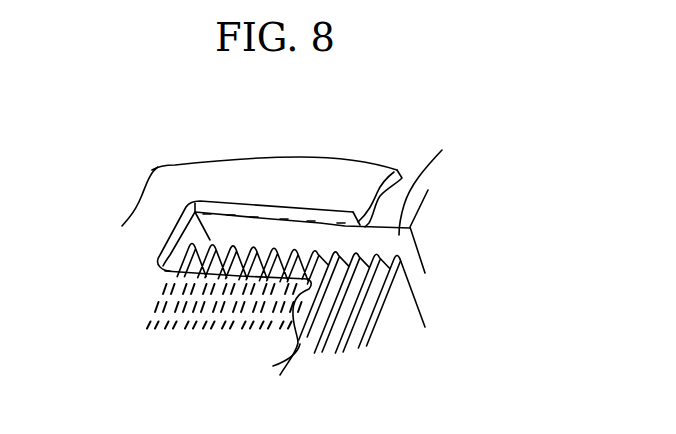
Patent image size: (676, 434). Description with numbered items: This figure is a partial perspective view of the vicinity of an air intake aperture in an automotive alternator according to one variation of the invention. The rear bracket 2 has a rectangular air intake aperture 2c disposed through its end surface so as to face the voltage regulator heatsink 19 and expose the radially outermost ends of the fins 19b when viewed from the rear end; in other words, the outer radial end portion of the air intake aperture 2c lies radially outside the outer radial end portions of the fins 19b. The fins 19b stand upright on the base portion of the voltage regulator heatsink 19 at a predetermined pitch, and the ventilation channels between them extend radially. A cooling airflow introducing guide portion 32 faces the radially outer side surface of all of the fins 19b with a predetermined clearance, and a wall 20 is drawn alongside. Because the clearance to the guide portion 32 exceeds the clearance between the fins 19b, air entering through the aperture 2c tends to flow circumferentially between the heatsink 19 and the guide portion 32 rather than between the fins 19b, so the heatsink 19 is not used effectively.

The rear bracket 2 is at (186, 176).
The rectangular air intake aperture 2c is at (178, 227).
The voltage regulator heatsink 19 is at (432, 306).
The fins 19b is at (160, 255).
The side wall 20 is at (433, 217).
The cooling airflow introducing guide portion 32 is at (431, 178).